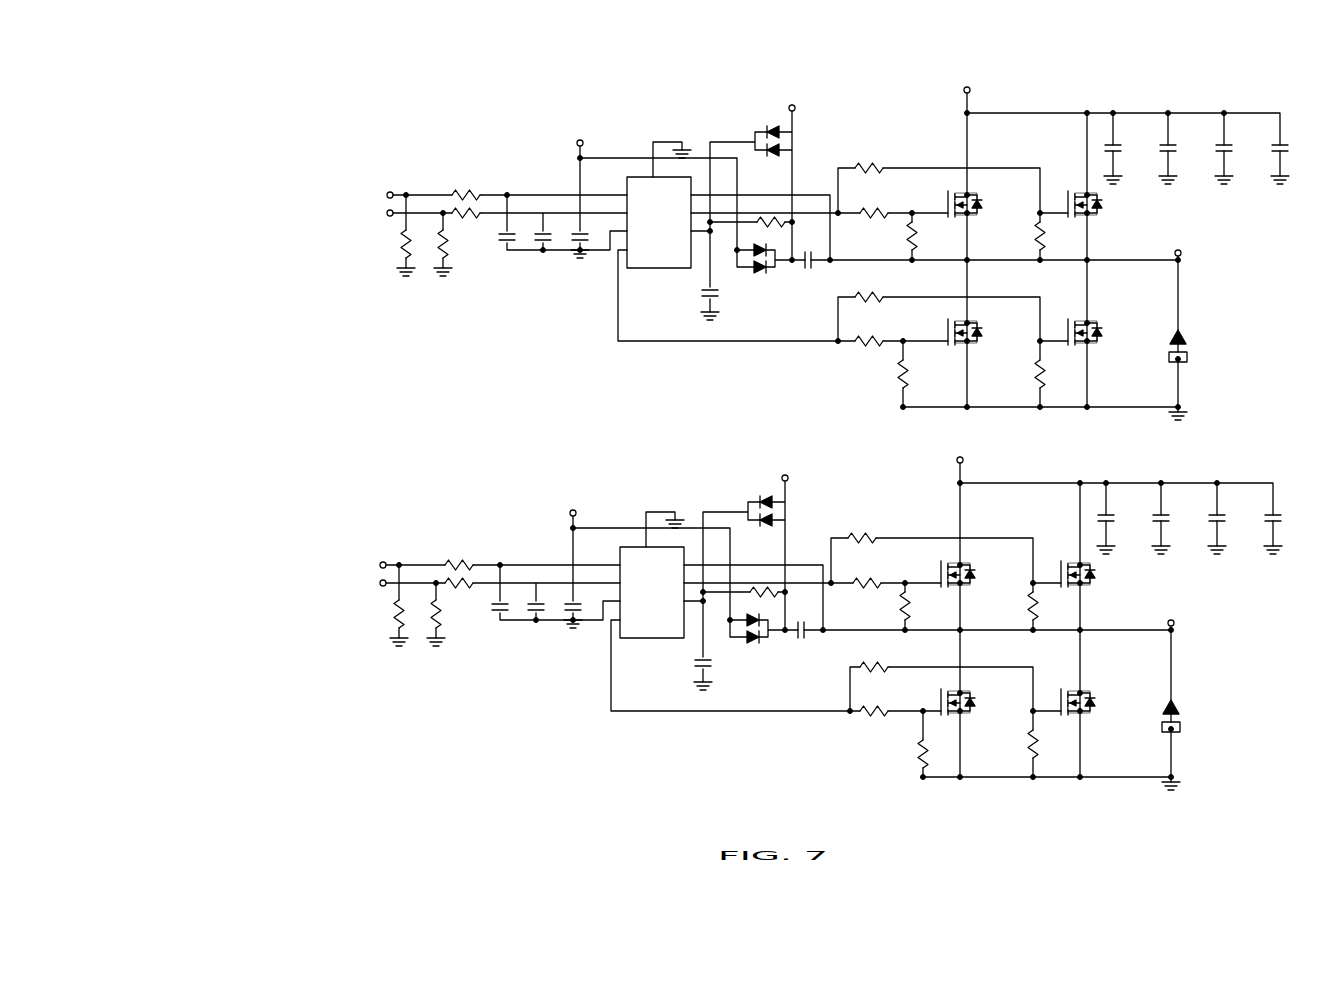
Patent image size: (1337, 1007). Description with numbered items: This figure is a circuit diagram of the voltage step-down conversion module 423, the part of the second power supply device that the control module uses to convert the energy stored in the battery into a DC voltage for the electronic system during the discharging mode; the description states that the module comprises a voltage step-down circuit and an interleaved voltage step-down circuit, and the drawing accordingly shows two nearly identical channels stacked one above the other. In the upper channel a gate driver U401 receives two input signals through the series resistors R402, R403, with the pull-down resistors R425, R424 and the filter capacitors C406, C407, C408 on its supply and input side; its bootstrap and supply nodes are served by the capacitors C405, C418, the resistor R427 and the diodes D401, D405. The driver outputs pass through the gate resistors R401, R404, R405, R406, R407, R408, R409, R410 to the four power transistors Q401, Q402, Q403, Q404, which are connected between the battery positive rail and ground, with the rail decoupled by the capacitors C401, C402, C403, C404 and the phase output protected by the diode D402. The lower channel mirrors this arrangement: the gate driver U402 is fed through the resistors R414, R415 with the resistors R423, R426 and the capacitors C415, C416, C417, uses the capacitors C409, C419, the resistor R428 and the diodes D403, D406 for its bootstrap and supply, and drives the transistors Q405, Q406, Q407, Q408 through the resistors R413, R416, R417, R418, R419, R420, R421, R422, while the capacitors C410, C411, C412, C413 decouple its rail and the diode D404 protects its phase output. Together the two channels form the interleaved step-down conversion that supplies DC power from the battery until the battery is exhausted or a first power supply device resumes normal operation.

The voltage step-down conversion module 423 is at (315, 224).
The resistor R401 is at (871, 175).
The resistor R402 is at (472, 187).
The resistor R403 is at (472, 222).
The resistor R404 is at (872, 221).
The resistor R405 is at (930, 235).
The resistor R406 is at (1058, 236).
The resistor R407 is at (866, 304).
The resistor R408 is at (866, 349).
The resistor R409 is at (921, 374).
The resistor R410 is at (1059, 374).
The resistor R413 is at (864, 545).
The resistor R414 is at (465, 557).
The resistor R415 is at (465, 592).
The resistor R416 is at (865, 591).
The resistor R417 is at (923, 605).
The resistor R418 is at (1051, 606).
The resistor R419 is at (873, 658).
The resistor R420 is at (872, 702).
The resistor R421 is at (907, 754).
The resistor R422 is at (1051, 744).
The resistor R423 is at (389, 612).
The resistor R424 is at (433, 242).
The resistor R425 is at (396, 242).
The resistor R426 is at (426, 612).
The resistor R427 is at (772, 230).
The resistor R428 is at (765, 600).
The capacitor C401 is at (1131, 137).
The capacitor C402 is at (1186, 137).
The capacitor C403 is at (1242, 137).
The capacitor C404 is at (1298, 137).
The capacitor C405 is at (817, 249).
The capacitor C406 is at (520, 228).
The capacitor C407 is at (556, 228).
The capacitor C408 is at (593, 228).
The capacitor C409 is at (810, 619).
The capacitor C410 is at (1124, 507).
The capacitor C411 is at (1179, 507).
The capacitor C412 is at (1235, 507).
The capacitor C413 is at (1291, 507).
The capacitor C415 is at (513, 598).
The capacitor C416 is at (549, 598).
The capacitor C417 is at (586, 598).
The capacitor C418 is at (728, 291).
The capacitor C419 is at (721, 661).
The MOSFET transistor Q401 is at (982, 195).
The MOSFET transistor Q402 is at (1104, 204).
The MOSFET transistor Q403 is at (985, 328).
The MOSFET transistor Q404 is at (1105, 328).
The MOSFET transistor Q405 is at (975, 565).
The MOSFET transistor Q406 is at (1097, 574).
The MOSFET transistor Q407 is at (978, 698).
The MOSFET transistor Q408 is at (1098, 698).
The diode D401 is at (784, 265).
The diode D402 is at (1202, 342).
The diode D403 is at (777, 635).
The diode D404 is at (1195, 712).
The diode D405 is at (762, 131).
The diode D406 is at (755, 501).
The gate driver IC U401 is at (647, 214).
The gate driver IC U402 is at (640, 584).